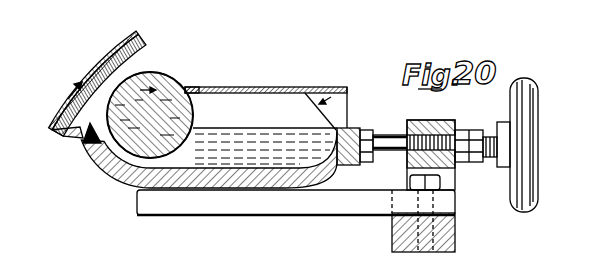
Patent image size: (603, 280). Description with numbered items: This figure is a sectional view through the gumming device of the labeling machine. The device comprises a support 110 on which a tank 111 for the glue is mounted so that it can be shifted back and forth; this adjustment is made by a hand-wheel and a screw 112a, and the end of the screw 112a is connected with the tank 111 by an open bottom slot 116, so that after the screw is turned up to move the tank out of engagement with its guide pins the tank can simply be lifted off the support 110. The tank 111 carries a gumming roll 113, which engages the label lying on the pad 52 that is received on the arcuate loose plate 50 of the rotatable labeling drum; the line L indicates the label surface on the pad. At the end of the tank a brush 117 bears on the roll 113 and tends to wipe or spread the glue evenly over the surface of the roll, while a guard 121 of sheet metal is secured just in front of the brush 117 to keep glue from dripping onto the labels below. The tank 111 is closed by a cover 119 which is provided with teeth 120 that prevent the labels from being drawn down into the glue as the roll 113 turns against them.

The loose plate 50 is at (108, 64).
The pad 52 is at (139, 38).
The outer layer line L is at (143, 37).
The brush 117 is at (78, 130).
The guard 121 is at (84, 150).
The gumming roll 113 is at (168, 77).
The cover 119 is at (293, 87).
The teeth 120 is at (187, 86).
The support 110 is at (268, 171).
The tank 111 is at (349, 127).
The open bottom slot 116 is at (378, 157).
The screw 112a is at (493, 126).